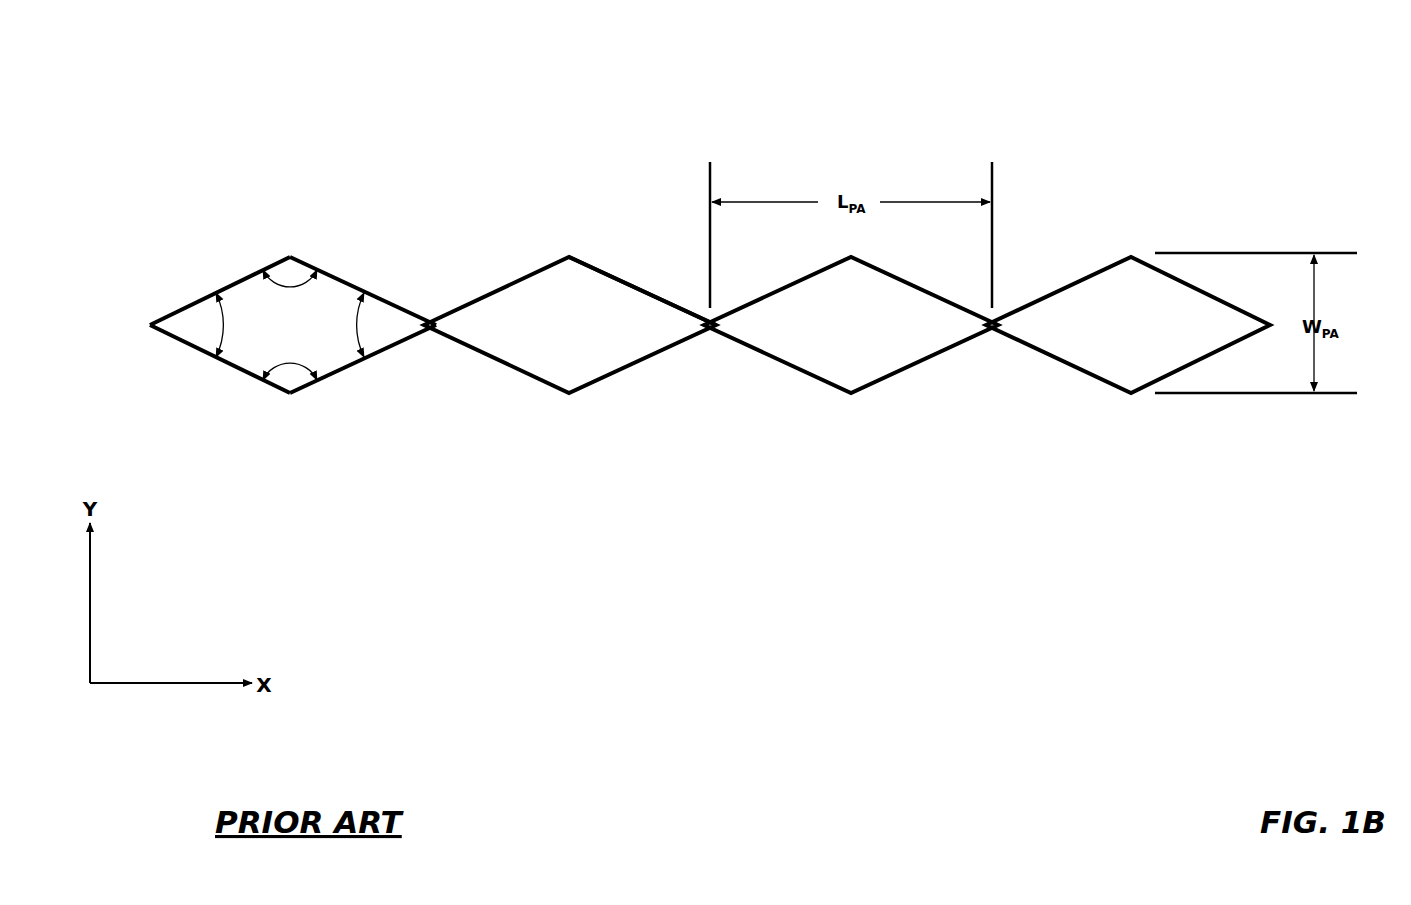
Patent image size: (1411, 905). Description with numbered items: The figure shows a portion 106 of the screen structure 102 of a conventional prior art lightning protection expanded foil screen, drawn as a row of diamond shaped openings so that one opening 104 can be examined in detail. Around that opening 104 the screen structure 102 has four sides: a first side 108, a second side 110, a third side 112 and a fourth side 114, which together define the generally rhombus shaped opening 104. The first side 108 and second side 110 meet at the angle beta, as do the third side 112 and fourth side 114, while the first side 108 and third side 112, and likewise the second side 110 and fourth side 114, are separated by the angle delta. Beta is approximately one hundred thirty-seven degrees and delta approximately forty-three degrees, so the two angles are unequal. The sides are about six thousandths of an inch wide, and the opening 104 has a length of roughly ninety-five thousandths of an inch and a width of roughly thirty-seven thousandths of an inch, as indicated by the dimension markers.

The screen structure 102 is at (617, 277).
The opening 104 is at (570, 325).
The portion of the screen structure 106 is at (1168, 114).
The first side 108 is at (240, 277).
The second side 110 is at (342, 277).
The third side 112 is at (240, 371).
The fourth side 114 is at (342, 371).